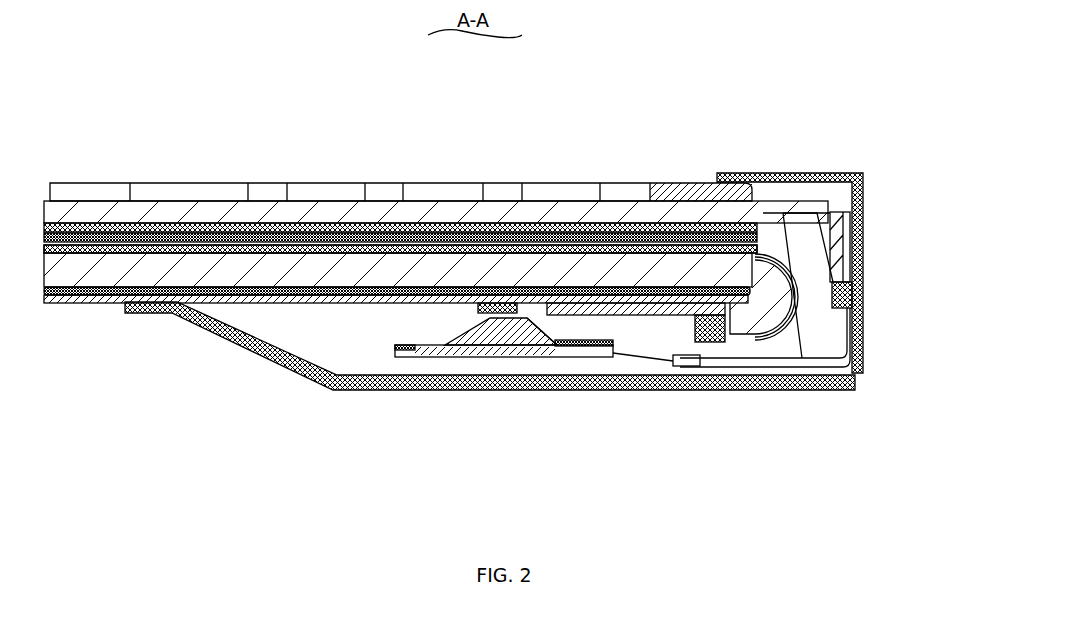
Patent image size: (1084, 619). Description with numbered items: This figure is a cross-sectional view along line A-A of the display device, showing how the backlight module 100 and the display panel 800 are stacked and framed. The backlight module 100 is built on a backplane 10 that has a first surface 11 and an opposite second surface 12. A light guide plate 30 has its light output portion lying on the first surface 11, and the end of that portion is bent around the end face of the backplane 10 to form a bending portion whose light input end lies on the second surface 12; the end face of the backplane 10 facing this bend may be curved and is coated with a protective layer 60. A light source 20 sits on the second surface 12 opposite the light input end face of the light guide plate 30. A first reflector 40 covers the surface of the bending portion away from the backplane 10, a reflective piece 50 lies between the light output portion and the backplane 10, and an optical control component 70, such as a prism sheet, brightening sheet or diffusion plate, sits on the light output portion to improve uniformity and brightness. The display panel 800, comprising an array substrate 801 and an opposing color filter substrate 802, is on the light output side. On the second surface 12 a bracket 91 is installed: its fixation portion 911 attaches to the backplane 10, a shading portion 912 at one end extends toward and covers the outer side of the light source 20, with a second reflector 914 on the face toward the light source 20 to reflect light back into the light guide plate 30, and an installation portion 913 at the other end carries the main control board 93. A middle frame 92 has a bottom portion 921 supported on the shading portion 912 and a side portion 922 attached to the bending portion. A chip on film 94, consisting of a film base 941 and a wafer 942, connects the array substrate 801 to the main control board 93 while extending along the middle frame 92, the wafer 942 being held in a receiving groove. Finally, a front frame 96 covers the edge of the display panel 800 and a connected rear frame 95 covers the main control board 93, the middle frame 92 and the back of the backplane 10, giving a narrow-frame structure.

The backlight module 100 is at (421, 220).
The display panel 800 is at (436, 148).
The array substrate 801 is at (260, 113).
The color filter substrate 802 is at (240, 198).
The backplane 10 is at (400, 211).
The first surface 11 is at (62, 298).
The second surface 12 is at (112, 304).
The light source 20 is at (712, 303).
The light guide plate 30 is at (452, 246).
The first reflector 40 is at (777, 237).
The reflective piece 50 is at (496, 224).
The protective layer 60 is at (737, 287).
The optical control component 70 is at (525, 245).
The bracket 91 is at (520, 396).
The fixation portion 911 is at (490, 318).
The shading portion 912 is at (554, 346).
The installation portion 913 is at (414, 348).
The second reflector 914 is at (627, 388).
The middle frame 92 is at (765, 343).
The bottom portion 921 is at (732, 355).
The side portion 922 is at (822, 300).
The main control board 93 is at (398, 350).
The chip on film 94 is at (862, 253).
The film base 941 is at (848, 210).
The wafer 942 is at (877, 297).
The rear frame 95 is at (296, 370).
The front frame 96 is at (857, 173).